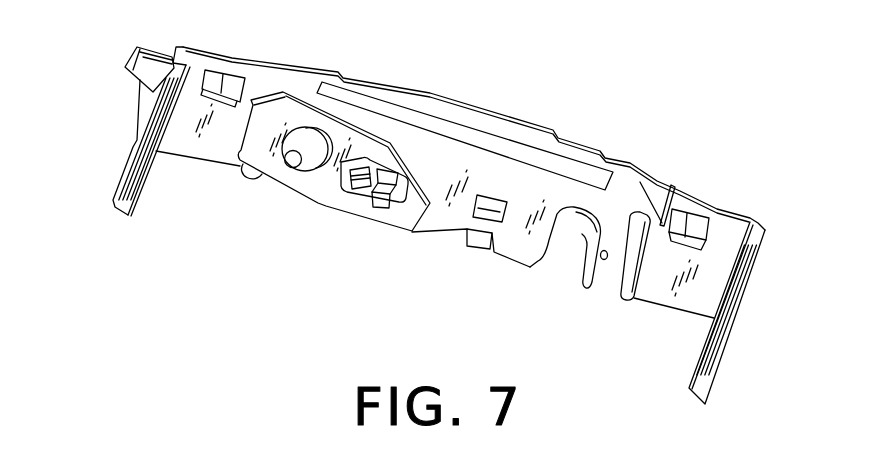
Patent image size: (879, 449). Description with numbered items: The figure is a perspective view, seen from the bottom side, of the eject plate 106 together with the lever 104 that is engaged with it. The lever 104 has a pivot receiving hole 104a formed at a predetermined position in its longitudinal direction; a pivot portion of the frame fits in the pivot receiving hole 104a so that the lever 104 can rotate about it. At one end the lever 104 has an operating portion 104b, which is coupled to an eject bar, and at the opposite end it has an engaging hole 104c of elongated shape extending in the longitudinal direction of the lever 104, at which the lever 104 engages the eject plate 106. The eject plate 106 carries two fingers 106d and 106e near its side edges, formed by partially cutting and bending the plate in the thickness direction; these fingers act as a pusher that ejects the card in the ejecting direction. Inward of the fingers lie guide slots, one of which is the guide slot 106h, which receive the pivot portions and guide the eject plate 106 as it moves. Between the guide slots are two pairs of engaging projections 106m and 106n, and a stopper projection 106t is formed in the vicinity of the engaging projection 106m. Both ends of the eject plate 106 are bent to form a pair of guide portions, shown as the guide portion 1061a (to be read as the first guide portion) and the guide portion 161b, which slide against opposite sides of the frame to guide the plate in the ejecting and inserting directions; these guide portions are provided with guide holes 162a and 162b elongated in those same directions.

The lever 104 is at (333, 123).
The pivot receiving hole 104a is at (302, 163).
The operating portion 104b is at (153, 77).
The engaging hole 104c is at (360, 163).
The eject plate 106 is at (497, 108).
The finger 106d is at (227, 90).
The finger 106e is at (683, 227).
The guide slot 106h is at (585, 248).
The engaging projections 106m is at (388, 182).
The engaging projections 106n is at (488, 213).
The stopper projection 106t is at (358, 183).
The guide portion 161b is at (707, 390).
The guide hole 162a is at (127, 178).
The guide hole 162b is at (703, 358).
The guide portion 1061a is at (118, 208).